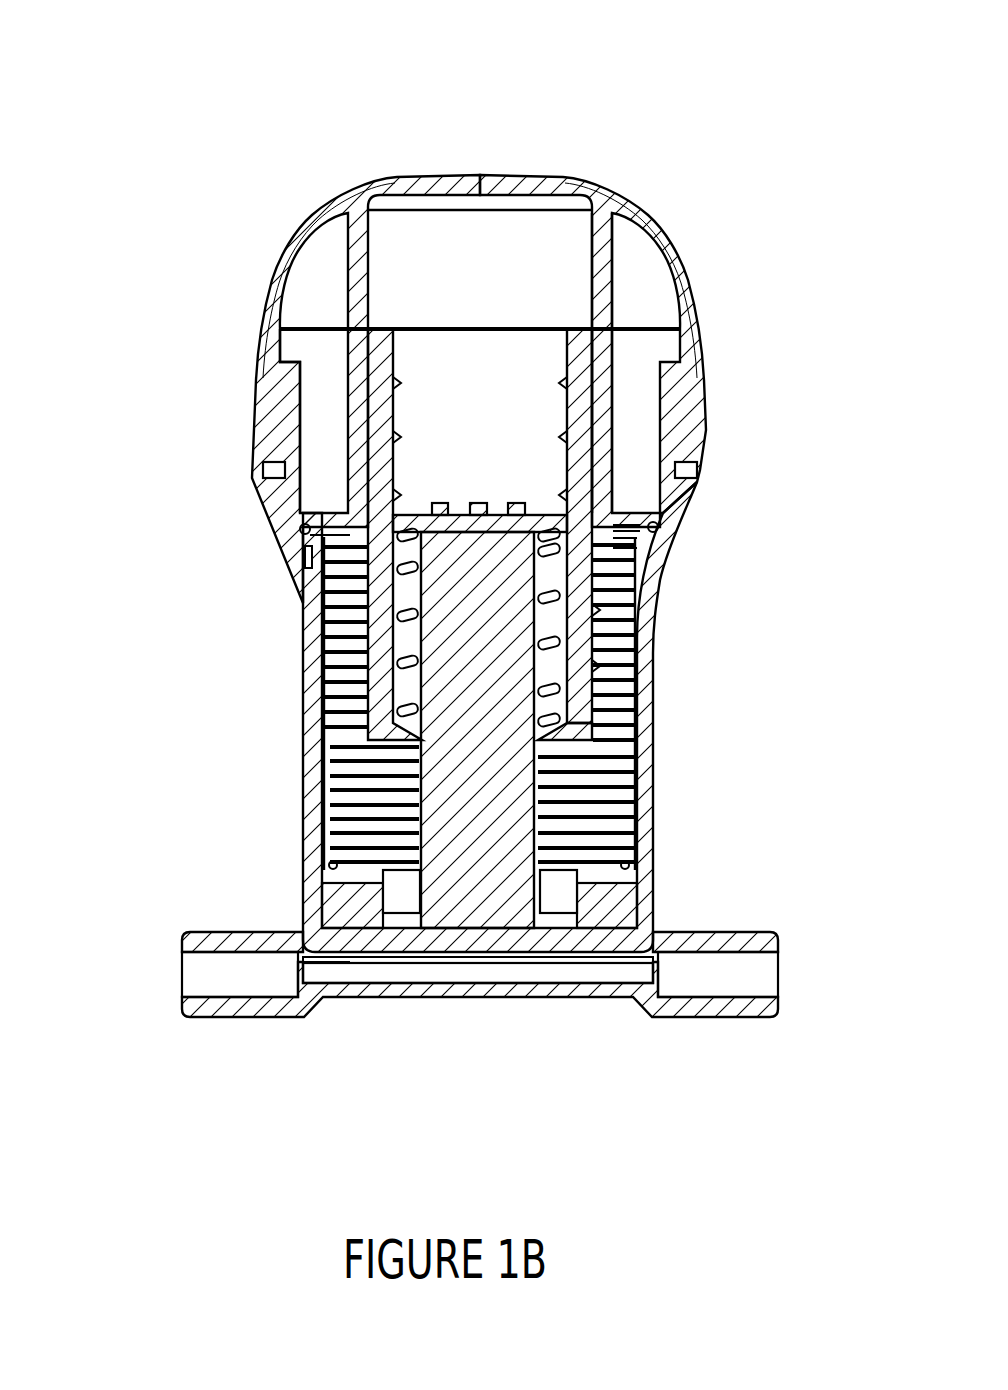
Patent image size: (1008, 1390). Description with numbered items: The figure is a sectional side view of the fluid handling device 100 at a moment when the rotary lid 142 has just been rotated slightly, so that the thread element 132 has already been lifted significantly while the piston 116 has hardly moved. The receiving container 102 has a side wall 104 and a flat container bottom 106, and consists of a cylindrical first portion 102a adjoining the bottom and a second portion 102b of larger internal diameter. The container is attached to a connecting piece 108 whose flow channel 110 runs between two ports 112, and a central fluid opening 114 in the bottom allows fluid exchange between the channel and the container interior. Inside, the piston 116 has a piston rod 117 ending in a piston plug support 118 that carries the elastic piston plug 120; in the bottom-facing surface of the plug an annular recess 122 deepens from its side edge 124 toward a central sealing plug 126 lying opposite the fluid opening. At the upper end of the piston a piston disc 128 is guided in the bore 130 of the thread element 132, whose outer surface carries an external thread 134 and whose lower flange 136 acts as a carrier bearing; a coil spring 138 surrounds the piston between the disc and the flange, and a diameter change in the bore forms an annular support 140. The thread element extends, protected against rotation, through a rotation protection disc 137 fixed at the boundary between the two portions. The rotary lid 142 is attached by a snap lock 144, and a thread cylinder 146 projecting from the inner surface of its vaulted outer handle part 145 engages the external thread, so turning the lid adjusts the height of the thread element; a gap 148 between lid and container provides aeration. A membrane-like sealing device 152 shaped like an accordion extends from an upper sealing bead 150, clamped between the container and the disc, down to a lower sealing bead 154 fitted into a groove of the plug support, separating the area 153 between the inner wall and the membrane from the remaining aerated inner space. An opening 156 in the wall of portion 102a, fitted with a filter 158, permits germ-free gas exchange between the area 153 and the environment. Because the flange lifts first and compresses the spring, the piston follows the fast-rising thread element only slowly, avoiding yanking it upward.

The fluid handling device 100 is at (500, 126).
The receiving container 102 is at (737, 707).
The first portion 102a is at (132, 530).
The second portion 102b is at (133, 380).
The side wall 104 is at (657, 893).
The container bottom 106 is at (406, 963).
The connecting piece 108 is at (700, 1017).
The flow channel 110 is at (572, 983).
The ports 112 is at (210, 975).
The fluid opening 114 is at (466, 983).
The piston 116 is at (432, 797).
The piston rod 117 is at (600, 810).
The piston plug support 118 is at (340, 916).
The piston plug 120 is at (327, 963).
The recess 122 is at (516, 963).
The side edge 124 is at (626, 983).
The sealing plug 126 is at (482, 960).
The piston disc 128 is at (540, 513).
The bore 130 is at (470, 365).
The thread element 132 is at (568, 338).
The external thread 134 is at (600, 607).
The flange 136 is at (600, 730).
The rotation protection disc 137 is at (645, 500).
The coil spring 138 is at (600, 683).
The annular support 140 is at (600, 637).
The rotary lid 142 is at (352, 163).
The snap lock 144 is at (260, 468).
The outer handle part 145 is at (308, 223).
The thread cylinder 146 is at (600, 440).
The gap 148 is at (252, 402).
The upper sealing bead 150 is at (298, 528).
The sealing device 152 is at (328, 700).
The area 153 is at (328, 767).
The sealing bead 154 is at (633, 860).
The opening 156 is at (295, 582).
The filter 158 is at (303, 560).